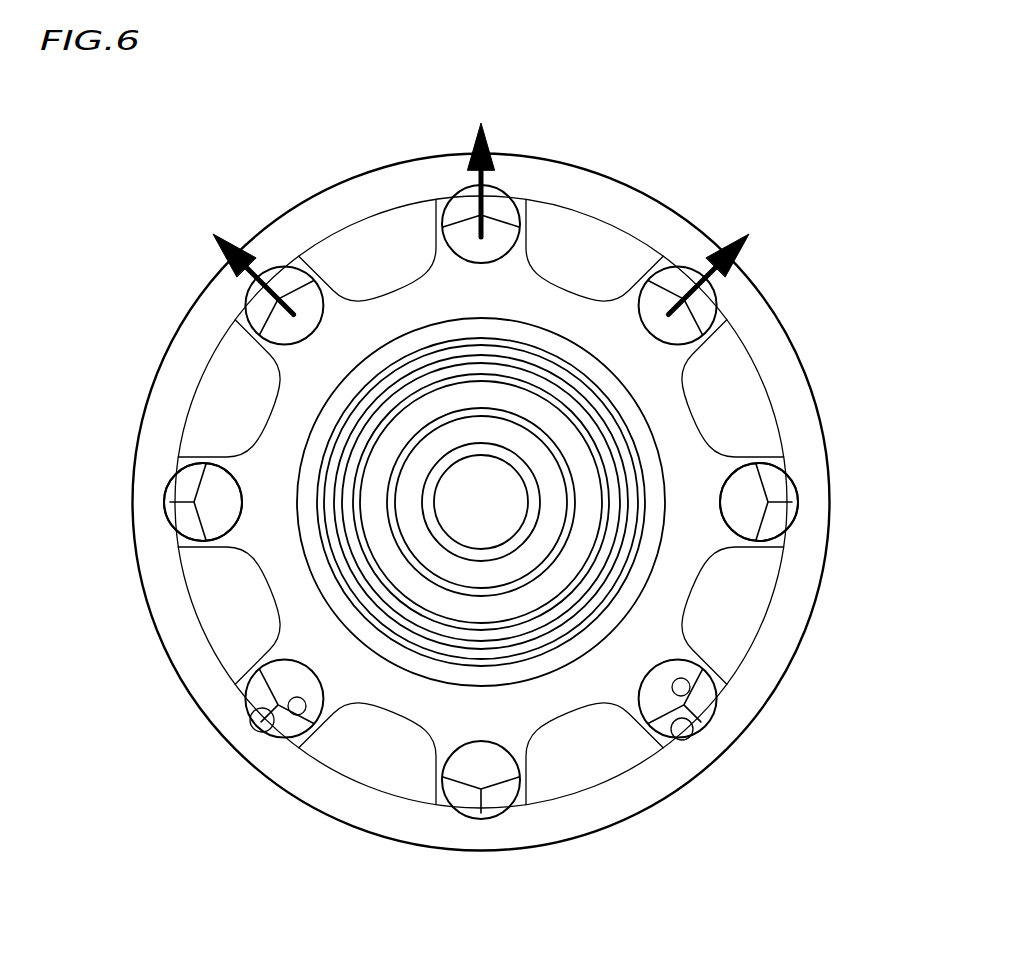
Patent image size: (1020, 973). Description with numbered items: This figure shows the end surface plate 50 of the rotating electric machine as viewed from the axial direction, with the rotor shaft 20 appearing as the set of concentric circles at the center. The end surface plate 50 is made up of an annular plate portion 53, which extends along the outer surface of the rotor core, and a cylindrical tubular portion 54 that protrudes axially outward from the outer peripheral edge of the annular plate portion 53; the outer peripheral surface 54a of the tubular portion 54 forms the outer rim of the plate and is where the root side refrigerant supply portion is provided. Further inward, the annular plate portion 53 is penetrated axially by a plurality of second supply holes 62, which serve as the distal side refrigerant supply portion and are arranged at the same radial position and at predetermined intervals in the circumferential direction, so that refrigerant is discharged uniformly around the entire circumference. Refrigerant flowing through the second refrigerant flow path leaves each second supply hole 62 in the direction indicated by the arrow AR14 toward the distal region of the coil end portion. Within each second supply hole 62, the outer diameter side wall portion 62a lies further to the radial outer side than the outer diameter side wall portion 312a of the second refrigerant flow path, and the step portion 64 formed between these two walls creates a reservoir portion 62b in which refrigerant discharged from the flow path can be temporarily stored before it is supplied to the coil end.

The end surface plate 50 is at (124, 216).
The rotor shaft 20 is at (517, 687).
The annular plate portion 53 is at (693, 448).
The tubular portion 54 is at (808, 428).
The outer peripheral surface 54a is at (628, 186).
The second supply hole 62 is at (463, 232).
The outer diameter side wall portion 62a is at (690, 740).
The reservoir portion 62b is at (787, 497).
The step portion 64 is at (483, 539).
The outer diameter side wall portion 312a is at (690, 690).
The arrow AR14 is at (252, 258).